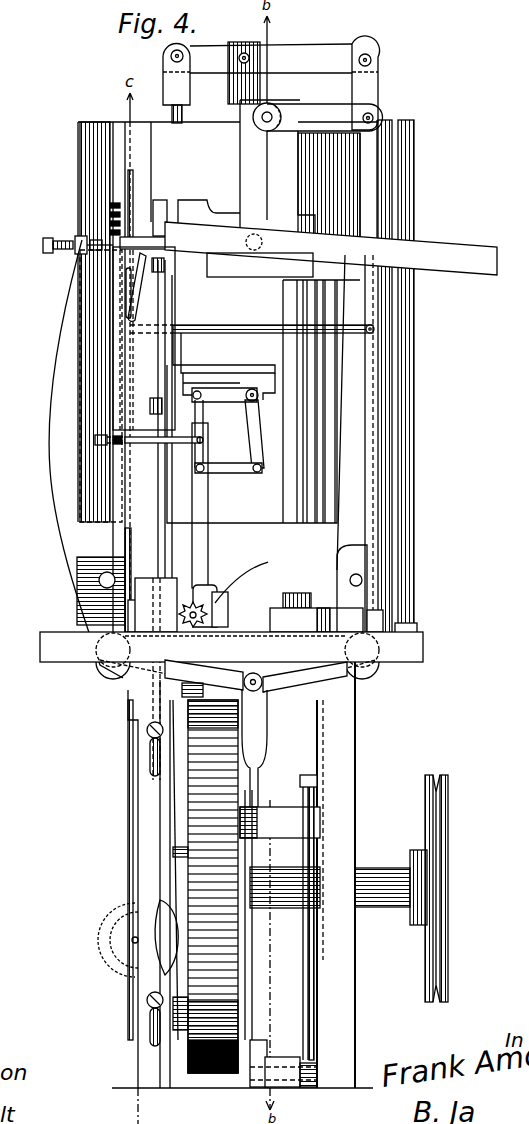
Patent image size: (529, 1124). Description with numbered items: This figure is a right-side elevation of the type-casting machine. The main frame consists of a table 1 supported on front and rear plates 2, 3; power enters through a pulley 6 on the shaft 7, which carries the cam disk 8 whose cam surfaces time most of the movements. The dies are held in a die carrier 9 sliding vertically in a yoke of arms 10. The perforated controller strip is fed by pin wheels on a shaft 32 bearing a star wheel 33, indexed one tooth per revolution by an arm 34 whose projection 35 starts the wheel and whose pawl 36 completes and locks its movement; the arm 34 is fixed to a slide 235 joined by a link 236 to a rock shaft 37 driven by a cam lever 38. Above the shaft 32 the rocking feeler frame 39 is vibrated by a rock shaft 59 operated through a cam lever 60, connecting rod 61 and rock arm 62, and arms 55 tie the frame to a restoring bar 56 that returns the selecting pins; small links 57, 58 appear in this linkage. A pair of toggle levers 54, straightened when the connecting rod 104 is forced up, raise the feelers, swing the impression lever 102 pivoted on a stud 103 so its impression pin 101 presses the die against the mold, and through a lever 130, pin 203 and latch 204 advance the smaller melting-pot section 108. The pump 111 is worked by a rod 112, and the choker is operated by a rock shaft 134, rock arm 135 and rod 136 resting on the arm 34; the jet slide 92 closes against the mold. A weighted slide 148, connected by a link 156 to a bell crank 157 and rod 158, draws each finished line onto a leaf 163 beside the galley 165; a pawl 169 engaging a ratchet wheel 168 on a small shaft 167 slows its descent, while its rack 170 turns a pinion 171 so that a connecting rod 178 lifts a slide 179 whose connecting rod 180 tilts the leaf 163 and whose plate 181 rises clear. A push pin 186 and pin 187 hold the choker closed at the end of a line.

The table 1 is at (423, 648).
The front plate 2 is at (130, 700).
The rear plate 3 is at (336, 875).
The pulley 6 is at (447, 836).
The shaft 7 is at (370, 872).
The cam disk 8 is at (213, 886).
The die carrier 9 is at (110, 212).
The arms 10 is at (128, 178).
The shaft 32 is at (193, 626).
The star wheel 33 is at (255, 574).
The arm 34 is at (311, 620).
The projection 35 is at (225, 617).
The pawl 36 is at (203, 585).
The rock shaft 37 is at (287, 1063).
The cam lever 38 is at (252, 942).
The rocking frame 39 is at (205, 500).
The toggle levers 54 is at (256, 676).
The arms 55 is at (178, 444).
The restoring bar 56 is at (97, 436).
The link 57 is at (233, 465).
The link 58 is at (259, 430).
The rock shaft 59 is at (268, 396).
The cam lever 60 is at (210, 705).
The connecting rod 61 is at (206, 414).
The rock arm 62 is at (225, 393).
The jet slide 92 is at (186, 201).
The impression pin 101 is at (60, 234).
The impression lever 102 is at (96, 463).
The stud 103 is at (77, 601).
The connecting rod 104 is at (262, 758).
The smaller part of melting pot 108 is at (258, 194).
The pump 111 is at (276, 62).
The rod 112 is at (183, 110).
The lever 130 is at (345, 494).
The rock shaft 134 is at (272, 113).
The rock arm 135 is at (325, 117).
The rod 136 is at (370, 187).
The weighted slide 148 is at (173, 850).
The link 156 is at (158, 416).
The bell crank 157 is at (160, 363).
The rod 158 is at (158, 272).
The leaf 163 is at (167, 240).
The galley 165 is at (331, 248).
The small shaft 167 is at (133, 945).
The ratchet wheel 168 is at (112, 938).
The pawl 169 is at (175, 888).
The rack 170 is at (163, 580).
The pinion 171 is at (130, 612).
The connecting rod 178 is at (125, 548).
The slide 179 is at (123, 470).
The connecting rod 180 is at (125, 298).
The plate 181 is at (155, 200).
The push pin 186 is at (233, 326).
The pin 187 is at (180, 345).
The pin 203 is at (265, 240).
The latch 204 is at (283, 278).
The slide 235 is at (323, 608).
The link 236 is at (313, 957).